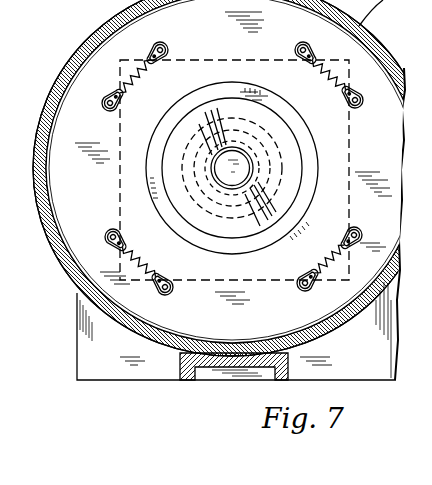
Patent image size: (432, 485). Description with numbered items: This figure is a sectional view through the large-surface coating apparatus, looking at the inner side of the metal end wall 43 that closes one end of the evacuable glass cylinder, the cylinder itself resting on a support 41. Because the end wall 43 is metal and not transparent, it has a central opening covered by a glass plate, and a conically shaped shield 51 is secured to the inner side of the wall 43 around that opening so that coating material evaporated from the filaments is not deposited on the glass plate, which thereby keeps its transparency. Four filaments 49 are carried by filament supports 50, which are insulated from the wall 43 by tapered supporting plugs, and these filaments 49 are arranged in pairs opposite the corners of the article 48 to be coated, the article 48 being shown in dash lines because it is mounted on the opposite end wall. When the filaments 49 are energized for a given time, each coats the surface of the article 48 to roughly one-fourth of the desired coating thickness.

The support 41 is at (223, 366).
The end wall 43 is at (216, 241).
The article 48 is at (252, 58).
The filaments 49 is at (140, 80).
The filament supports 50 is at (168, 46).
The conically shaped shield 51 is at (288, 137).